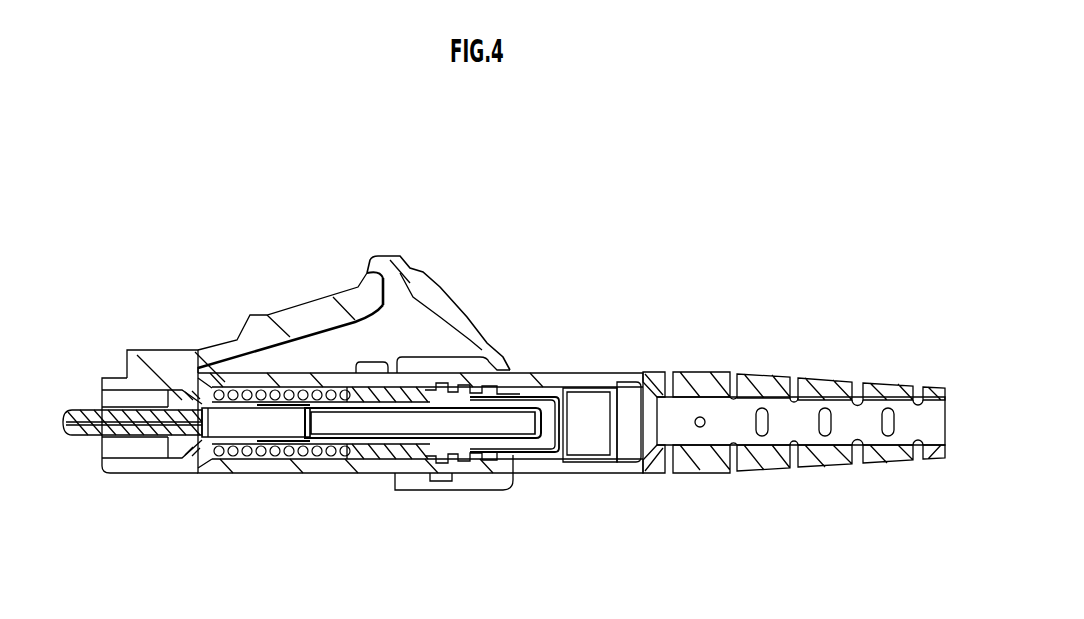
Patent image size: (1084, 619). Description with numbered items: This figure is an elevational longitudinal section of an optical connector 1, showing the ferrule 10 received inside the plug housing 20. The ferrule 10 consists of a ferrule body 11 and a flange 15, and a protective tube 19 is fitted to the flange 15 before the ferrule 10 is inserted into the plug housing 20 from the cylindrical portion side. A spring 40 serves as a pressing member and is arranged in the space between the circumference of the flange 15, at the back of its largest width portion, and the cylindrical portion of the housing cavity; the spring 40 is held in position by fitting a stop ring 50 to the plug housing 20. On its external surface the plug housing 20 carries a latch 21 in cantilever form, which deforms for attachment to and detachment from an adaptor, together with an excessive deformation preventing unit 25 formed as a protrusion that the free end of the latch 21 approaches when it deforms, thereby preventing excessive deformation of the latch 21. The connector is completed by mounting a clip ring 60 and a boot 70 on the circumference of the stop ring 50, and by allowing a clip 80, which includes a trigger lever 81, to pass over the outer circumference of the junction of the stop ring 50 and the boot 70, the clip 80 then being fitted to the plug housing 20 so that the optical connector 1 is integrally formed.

The optical connector 1 is at (540, 251).
The ferrule 10 is at (210, 540).
The ferrule body 11 is at (97, 437).
The flange 15 is at (185, 462).
The protective tube 19 is at (521, 378).
The plug housing 20 is at (330, 462).
The latch 21 is at (326, 306).
The excessive deformation preventing unit 25 is at (384, 364).
The spring 40 is at (268, 474).
The stop ring 50 is at (437, 479).
The clip ring 60 is at (545, 473).
The boot 70 is at (748, 474).
The clip 80 is at (497, 481).
The trigger lever 81 is at (431, 262).